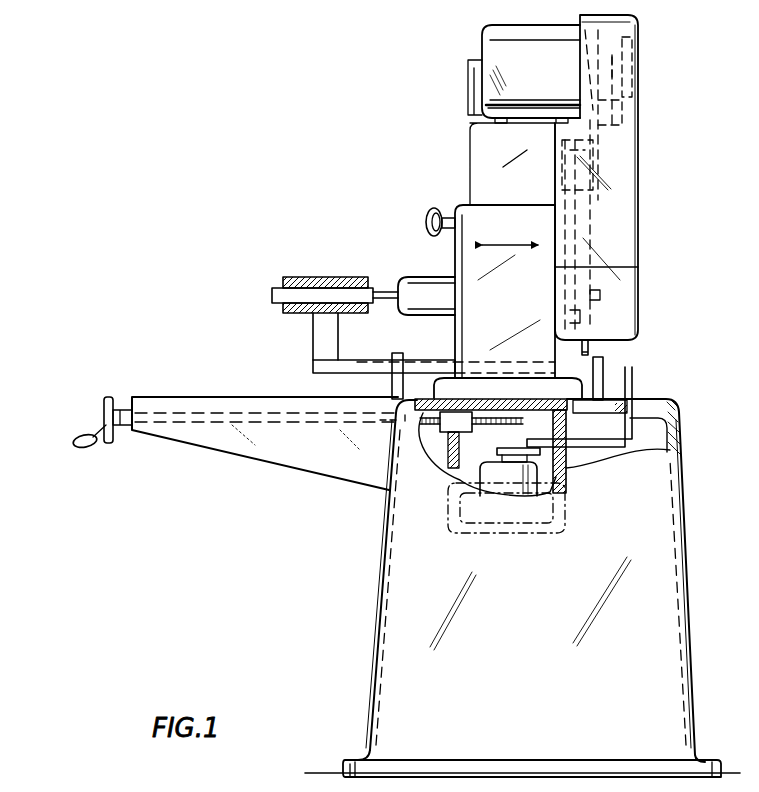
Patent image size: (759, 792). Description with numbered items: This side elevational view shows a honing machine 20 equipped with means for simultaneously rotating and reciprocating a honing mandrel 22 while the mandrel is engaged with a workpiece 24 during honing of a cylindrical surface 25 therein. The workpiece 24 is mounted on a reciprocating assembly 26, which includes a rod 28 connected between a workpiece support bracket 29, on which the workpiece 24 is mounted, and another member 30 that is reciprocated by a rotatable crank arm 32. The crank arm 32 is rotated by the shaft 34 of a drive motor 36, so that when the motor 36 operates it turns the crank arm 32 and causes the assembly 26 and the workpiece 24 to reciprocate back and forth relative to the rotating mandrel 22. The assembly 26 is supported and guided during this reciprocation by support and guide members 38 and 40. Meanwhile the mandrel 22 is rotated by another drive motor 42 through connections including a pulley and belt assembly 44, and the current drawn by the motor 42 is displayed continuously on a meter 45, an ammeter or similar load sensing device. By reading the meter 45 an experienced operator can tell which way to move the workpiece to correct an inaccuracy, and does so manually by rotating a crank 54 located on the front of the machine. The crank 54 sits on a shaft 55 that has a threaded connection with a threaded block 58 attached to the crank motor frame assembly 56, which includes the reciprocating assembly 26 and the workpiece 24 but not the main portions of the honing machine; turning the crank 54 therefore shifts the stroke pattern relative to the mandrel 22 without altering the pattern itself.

The honing machine 20 is at (391, 198).
The honing mandrel 22 is at (318, 278).
The workpiece 24 is at (355, 280).
The cylindrical surface 25 is at (276, 297).
The reciprocating assembly 26 is at (306, 365).
The rod 28 is at (358, 366).
The workpiece support bracket 29 is at (318, 340).
The member 30 is at (631, 395).
The crank arm 32 is at (514, 447).
The shaft 34 is at (480, 458).
The drive motor 36 is at (515, 498).
The support and guide member 38 is at (391, 388).
The support and guide member 40 is at (605, 363).
The drive motor 42 is at (480, 43).
The pulley and belt assembly 44 is at (624, 124).
The meter 45 is at (429, 210).
The crank 54 is at (104, 412).
The shaft 55 is at (116, 428).
The crank motor frame assembly 56 is at (570, 460).
The threaded block 58 is at (420, 420).